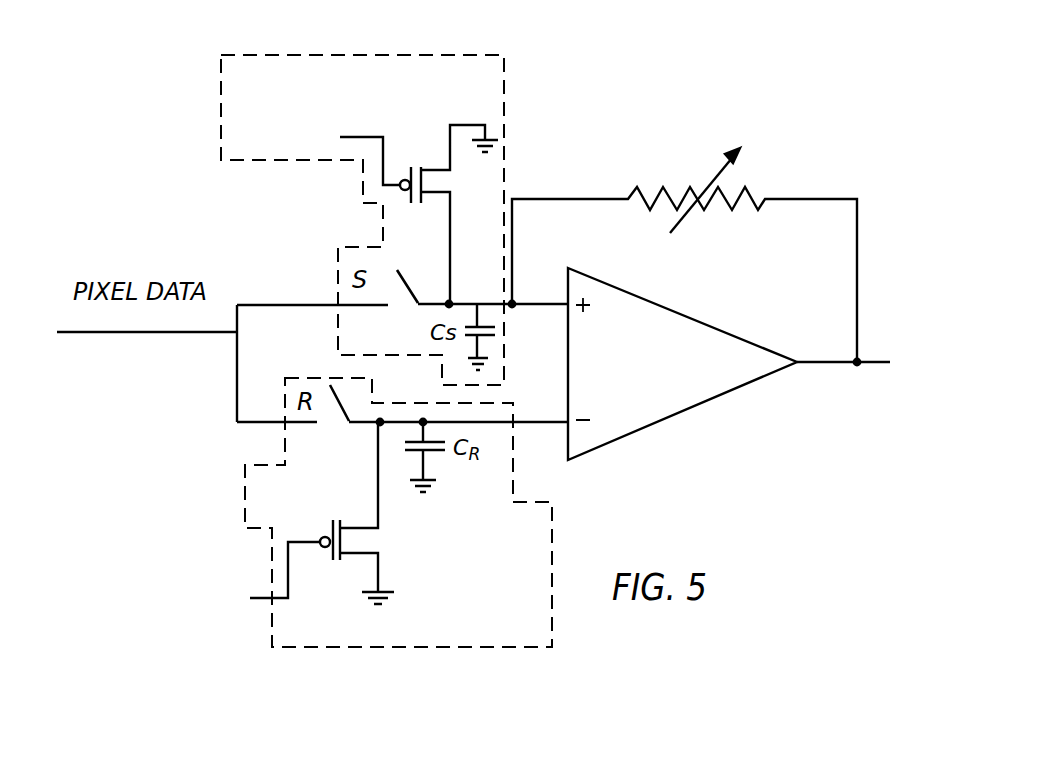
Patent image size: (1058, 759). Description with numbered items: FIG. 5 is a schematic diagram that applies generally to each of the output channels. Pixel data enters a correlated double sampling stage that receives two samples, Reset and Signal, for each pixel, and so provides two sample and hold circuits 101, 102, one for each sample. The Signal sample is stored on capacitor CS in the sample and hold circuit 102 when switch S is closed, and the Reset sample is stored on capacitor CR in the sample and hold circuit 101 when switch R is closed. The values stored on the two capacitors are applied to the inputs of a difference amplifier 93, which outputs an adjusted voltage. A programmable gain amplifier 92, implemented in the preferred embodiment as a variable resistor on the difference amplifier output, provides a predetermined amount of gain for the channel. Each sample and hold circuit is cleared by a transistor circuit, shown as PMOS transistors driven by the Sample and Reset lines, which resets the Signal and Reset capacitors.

The difference amplifier 92 is at (698, 182).
The programmable gain amplifier 93 is at (713, 387).
The sample and hold circuit 101 is at (243, 492).
The sample and hold circuit 102 is at (382, 217).